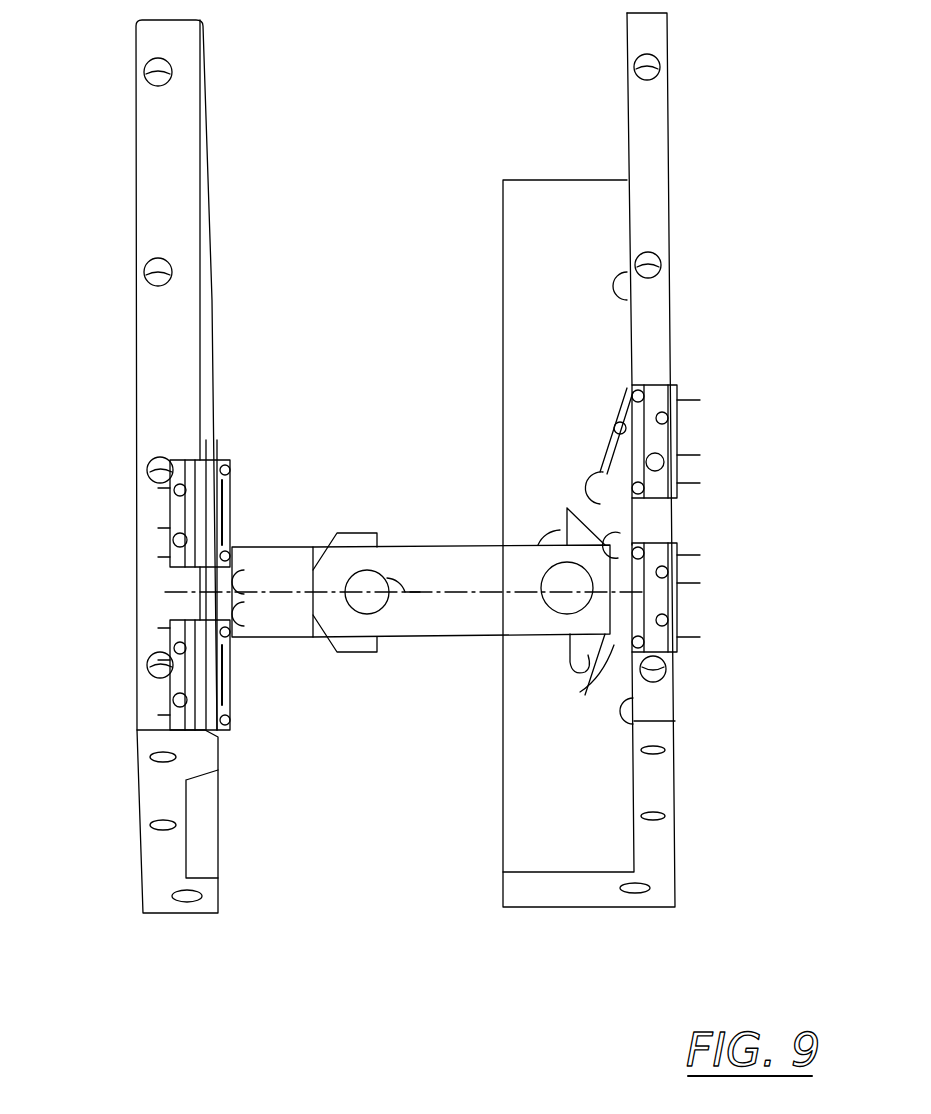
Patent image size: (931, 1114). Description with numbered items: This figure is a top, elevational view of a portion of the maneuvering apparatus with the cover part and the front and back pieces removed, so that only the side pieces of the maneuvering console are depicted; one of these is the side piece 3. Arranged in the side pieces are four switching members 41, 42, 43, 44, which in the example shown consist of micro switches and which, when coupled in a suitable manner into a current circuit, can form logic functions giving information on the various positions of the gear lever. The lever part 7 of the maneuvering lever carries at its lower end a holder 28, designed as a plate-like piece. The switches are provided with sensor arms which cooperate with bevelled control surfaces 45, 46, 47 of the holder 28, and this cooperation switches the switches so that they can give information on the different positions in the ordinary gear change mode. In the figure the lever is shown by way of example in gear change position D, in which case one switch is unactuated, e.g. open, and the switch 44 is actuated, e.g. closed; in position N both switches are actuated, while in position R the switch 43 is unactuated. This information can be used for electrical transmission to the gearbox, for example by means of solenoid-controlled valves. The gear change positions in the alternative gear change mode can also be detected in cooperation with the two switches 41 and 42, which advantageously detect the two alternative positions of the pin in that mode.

The side piece 3 is at (155, 370).
The lever part 7 is at (565, 597).
The holder 28 is at (396, 546).
The switching member 41 is at (228, 508).
The switching member 42 is at (222, 690).
The switching member 43 is at (655, 440).
The switching member 44 is at (655, 612).
The cam 45 is at (583, 508).
The bevelled control surface 46 is at (590, 665).
The bevelled control surface 47 is at (618, 640).